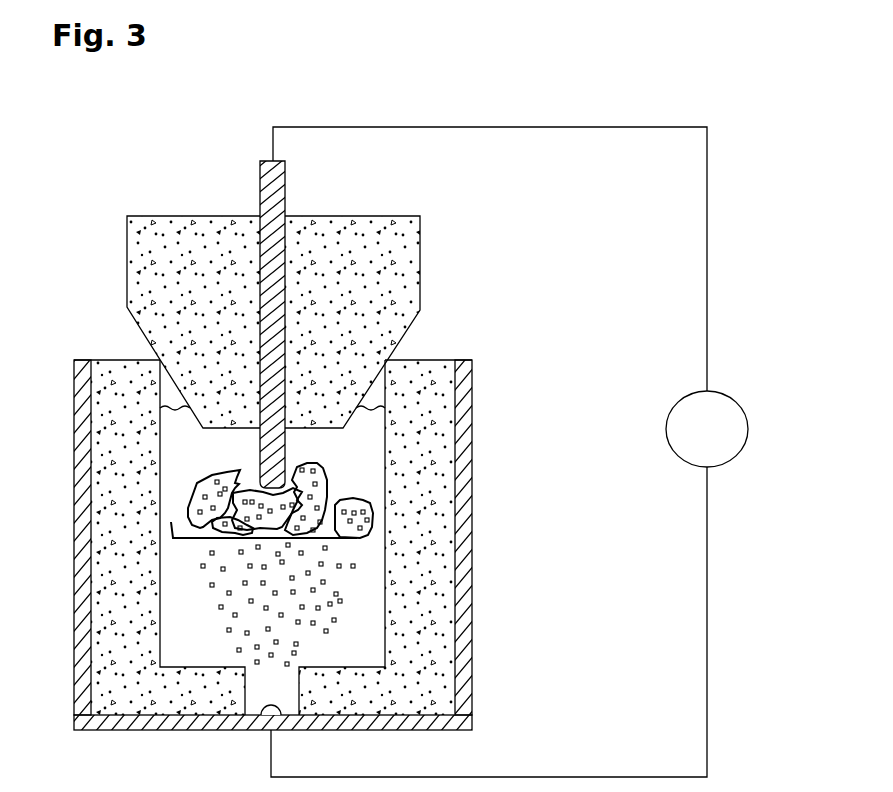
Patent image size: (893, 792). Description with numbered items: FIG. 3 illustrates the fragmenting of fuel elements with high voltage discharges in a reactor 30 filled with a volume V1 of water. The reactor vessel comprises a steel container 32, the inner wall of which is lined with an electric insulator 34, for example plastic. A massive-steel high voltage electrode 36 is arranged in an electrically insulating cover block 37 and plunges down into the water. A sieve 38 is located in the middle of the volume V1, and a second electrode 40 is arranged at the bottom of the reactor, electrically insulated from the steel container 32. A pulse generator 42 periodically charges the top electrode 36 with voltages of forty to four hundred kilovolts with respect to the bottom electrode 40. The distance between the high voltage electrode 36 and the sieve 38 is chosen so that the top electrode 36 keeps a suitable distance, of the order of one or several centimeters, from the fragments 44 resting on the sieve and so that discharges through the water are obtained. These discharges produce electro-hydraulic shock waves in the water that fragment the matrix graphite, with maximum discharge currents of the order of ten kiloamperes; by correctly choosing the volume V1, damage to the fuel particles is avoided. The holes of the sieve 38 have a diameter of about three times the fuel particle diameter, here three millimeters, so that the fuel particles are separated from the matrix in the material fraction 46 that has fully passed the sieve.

The reactor 30 is at (213, 192).
The steel container 32 is at (472, 442).
The electric insulator 34 is at (438, 603).
The high voltage electrode 36 is at (281, 180).
The electrically insulating cover block 37 is at (403, 282).
The sieve 38 is at (357, 538).
The second electrode 40 is at (260, 718).
The pulse generator 42 is at (722, 407).
The fragments 44 is at (372, 522).
The material fraction 46 is at (344, 629).
The volume of water V1 is at (372, 420).